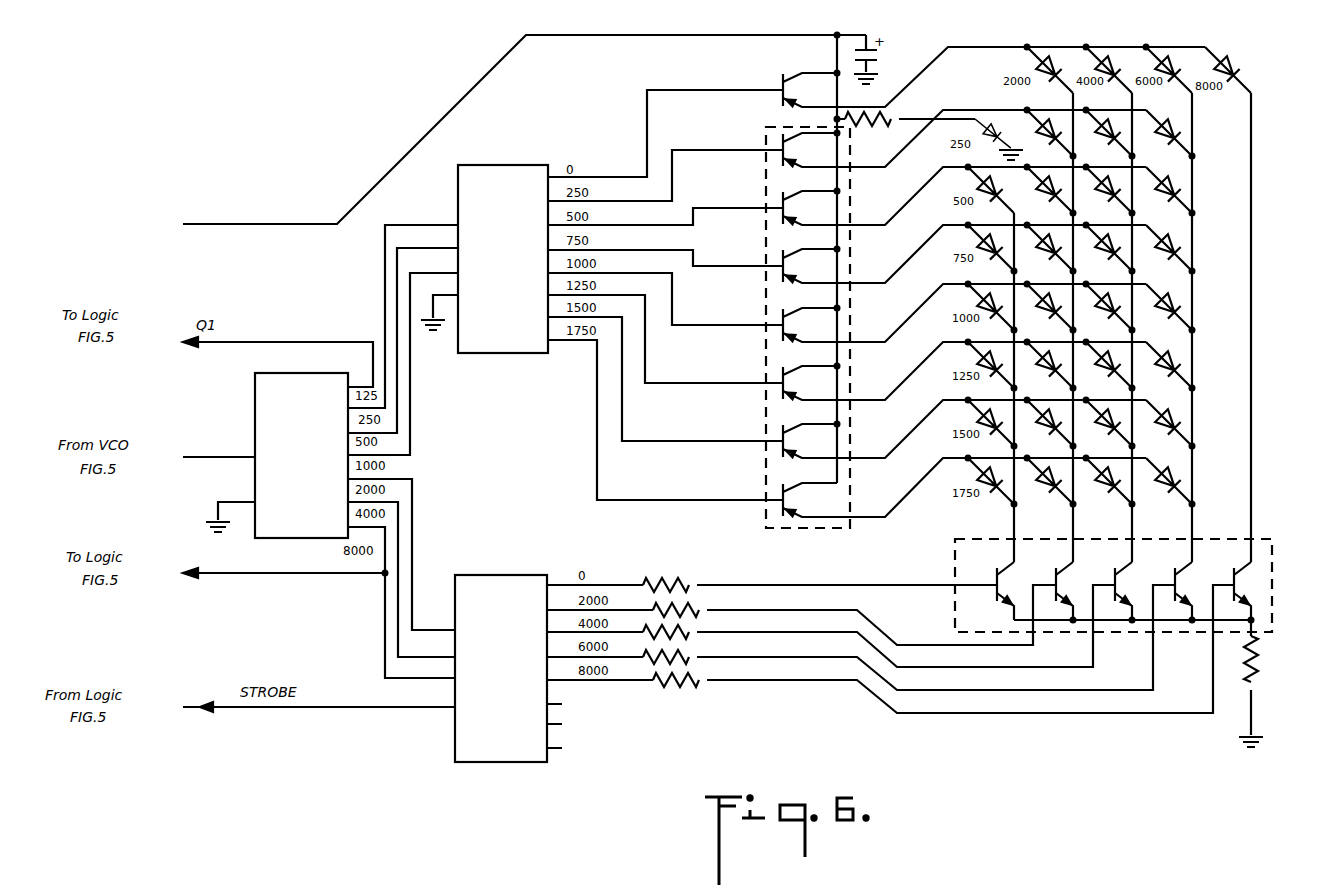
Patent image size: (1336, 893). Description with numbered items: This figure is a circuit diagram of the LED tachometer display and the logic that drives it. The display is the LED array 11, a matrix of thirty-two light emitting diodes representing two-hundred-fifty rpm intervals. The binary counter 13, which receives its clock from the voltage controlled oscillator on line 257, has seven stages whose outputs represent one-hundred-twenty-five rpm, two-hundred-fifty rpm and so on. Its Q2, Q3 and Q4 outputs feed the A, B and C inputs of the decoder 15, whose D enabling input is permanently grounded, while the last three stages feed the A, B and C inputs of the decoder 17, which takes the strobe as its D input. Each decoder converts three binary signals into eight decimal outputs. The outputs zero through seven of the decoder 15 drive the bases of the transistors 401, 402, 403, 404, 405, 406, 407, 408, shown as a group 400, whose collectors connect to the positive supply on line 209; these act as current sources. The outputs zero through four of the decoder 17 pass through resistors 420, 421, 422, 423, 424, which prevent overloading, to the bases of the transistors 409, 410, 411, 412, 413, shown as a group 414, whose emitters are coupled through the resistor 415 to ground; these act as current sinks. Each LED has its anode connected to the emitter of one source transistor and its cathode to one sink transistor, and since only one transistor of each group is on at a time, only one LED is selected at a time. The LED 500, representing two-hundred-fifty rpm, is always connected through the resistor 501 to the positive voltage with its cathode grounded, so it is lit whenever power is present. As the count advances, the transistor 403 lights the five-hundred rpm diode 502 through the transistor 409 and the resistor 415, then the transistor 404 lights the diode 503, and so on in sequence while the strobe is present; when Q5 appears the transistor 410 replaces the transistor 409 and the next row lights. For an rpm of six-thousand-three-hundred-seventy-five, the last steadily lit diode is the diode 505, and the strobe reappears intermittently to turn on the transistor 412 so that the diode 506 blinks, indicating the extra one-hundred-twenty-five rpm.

The line 209 is at (238, 224).
The decoder 15 is at (458, 165).
The binary counter 13 is at (258, 388).
The line 257 is at (200, 455).
The decoder 17 is at (522, 762).
The transistor group 400 is at (847, 208).
The transistor 401 is at (783, 97).
The transistor 402 is at (783, 157).
The transistor 403 is at (783, 215).
The transistor 404 is at (783, 273).
The transistor 405 is at (783, 332).
The transistor 406 is at (783, 390).
The transistor 407 is at (783, 448).
The transistor 408 is at (783, 507).
The LED 500 is at (992, 126).
The resistor 501 is at (880, 126).
The 500 rpm diode 502 is at (972, 187).
The light emitting diode 503 is at (968, 243).
The diode 505 is at (1176, 128).
The diode 506 is at (1176, 182).
The LED array 11 is at (1255, 290).
The transistor 409 is at (995, 577).
The transistor 410 is at (1054, 577).
The transistor 411 is at (1113, 577).
The transistor 412 is at (1173, 577).
The transistor 413 is at (1232, 577).
The transistor group 414 is at (1272, 540).
The resistor 415 is at (1258, 690).
The resistor 420 is at (697, 582).
The resistor 421 is at (707, 607).
The resistor 422 is at (697, 629).
The resistor 423 is at (697, 654).
The resistor 424 is at (718, 666).